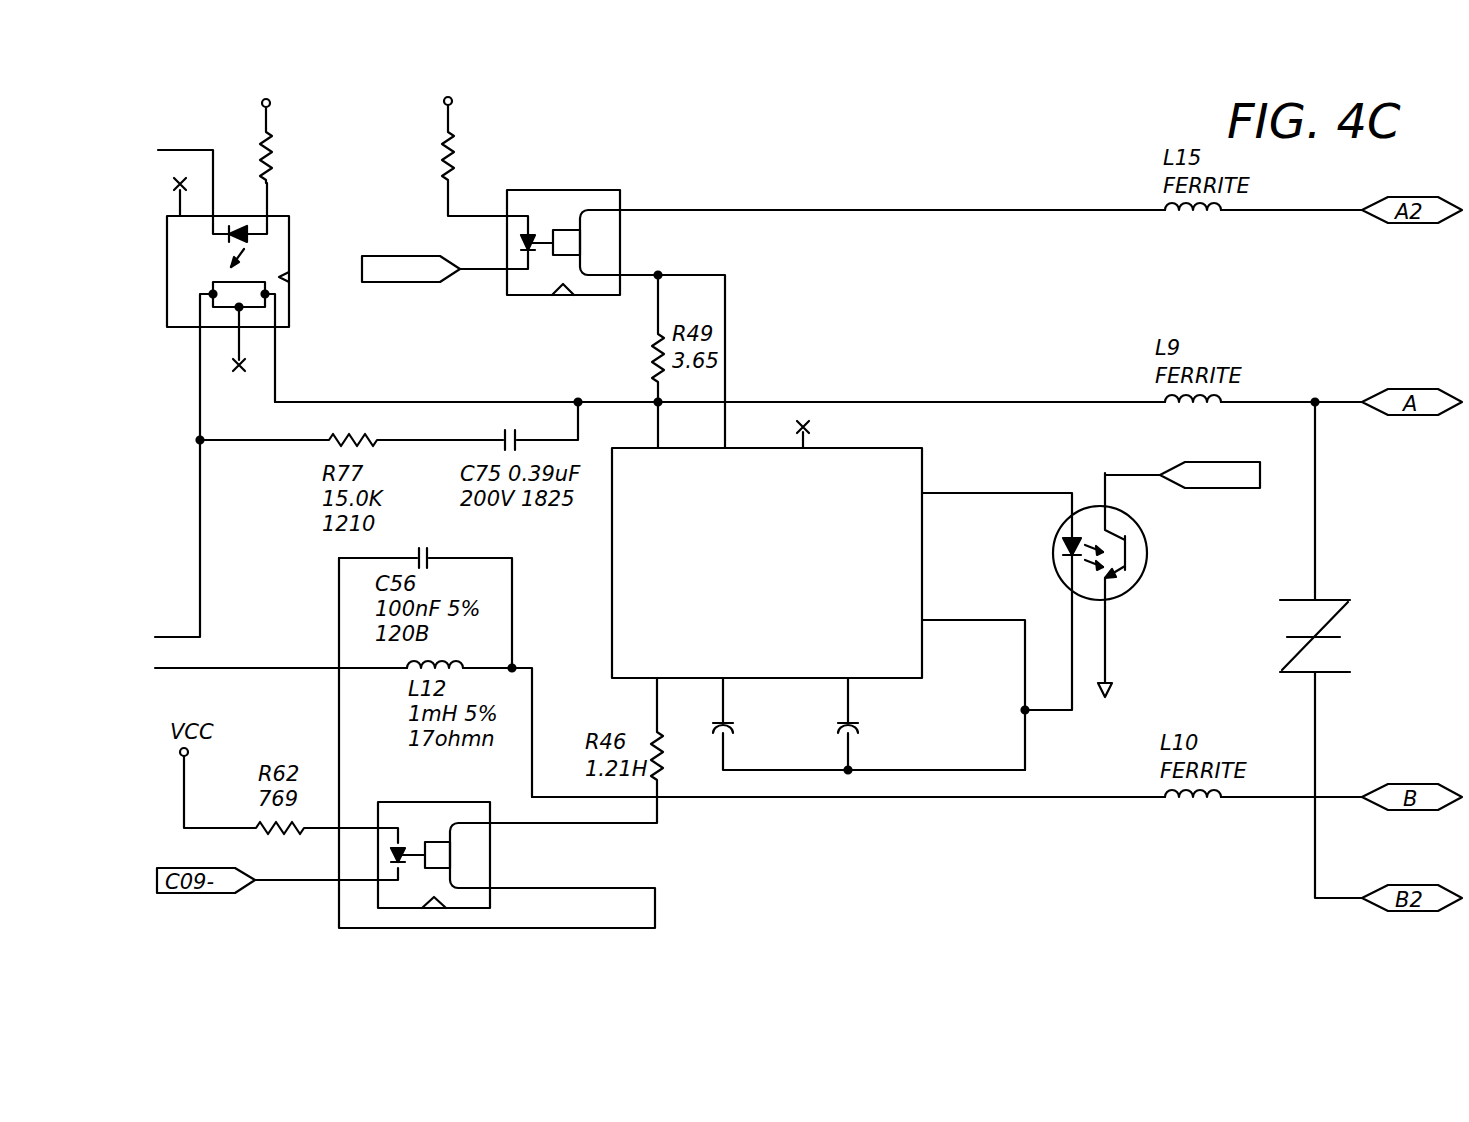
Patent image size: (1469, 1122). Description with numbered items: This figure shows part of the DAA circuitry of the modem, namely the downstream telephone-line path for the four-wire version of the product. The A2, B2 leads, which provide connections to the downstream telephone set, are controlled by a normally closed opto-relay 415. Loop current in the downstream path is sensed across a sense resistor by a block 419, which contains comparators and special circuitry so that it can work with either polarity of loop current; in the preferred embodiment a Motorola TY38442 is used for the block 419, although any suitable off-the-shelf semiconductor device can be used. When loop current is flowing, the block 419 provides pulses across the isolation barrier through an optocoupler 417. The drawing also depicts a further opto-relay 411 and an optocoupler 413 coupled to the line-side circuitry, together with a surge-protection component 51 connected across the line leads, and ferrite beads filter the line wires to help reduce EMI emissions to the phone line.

The relay U19 AQV2109 solid state relay 411 is at (289, 232).
The optocoupler U16B PBB150 413 is at (490, 856).
The normally closed opto-relay 415 is at (620, 193).
The optocoupler 417 is at (1147, 562).
The block 419 is at (922, 452).
The varistor 275V 51 is at (1357, 650).